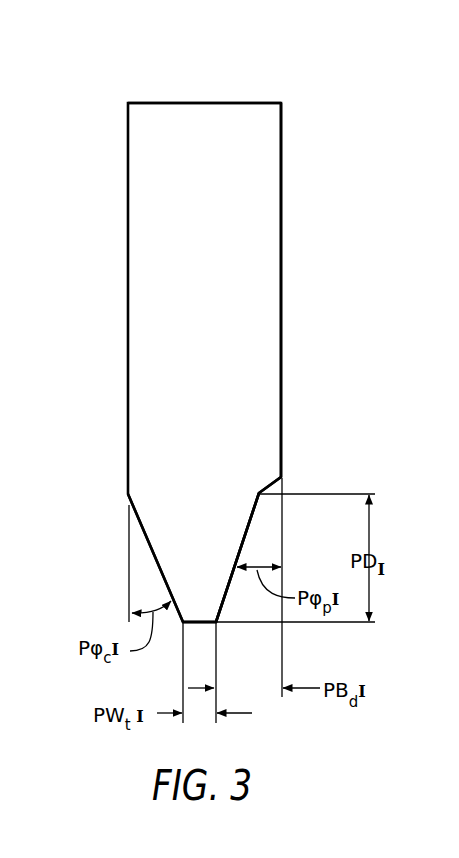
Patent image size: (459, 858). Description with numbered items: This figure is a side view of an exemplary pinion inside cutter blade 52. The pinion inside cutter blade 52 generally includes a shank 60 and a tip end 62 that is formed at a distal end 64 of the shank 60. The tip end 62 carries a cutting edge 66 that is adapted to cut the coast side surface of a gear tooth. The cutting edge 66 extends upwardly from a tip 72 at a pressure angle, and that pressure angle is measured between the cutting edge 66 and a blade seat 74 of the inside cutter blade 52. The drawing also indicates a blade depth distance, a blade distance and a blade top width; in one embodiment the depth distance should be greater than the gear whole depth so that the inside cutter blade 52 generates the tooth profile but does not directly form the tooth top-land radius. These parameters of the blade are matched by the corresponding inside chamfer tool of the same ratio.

The pinion inside cutter blade 52 is at (320, 105).
The shank 60 is at (157, 140).
The tip end 62 is at (75, 541).
The distal end 64 is at (283, 478).
The cutting edge 66 is at (250, 532).
The tip 72 is at (221, 626).
The blade seat 74 is at (283, 177).